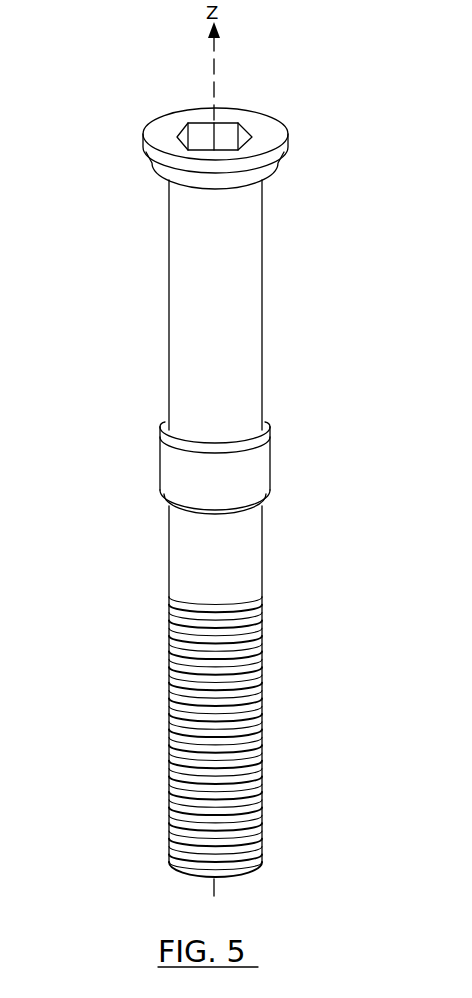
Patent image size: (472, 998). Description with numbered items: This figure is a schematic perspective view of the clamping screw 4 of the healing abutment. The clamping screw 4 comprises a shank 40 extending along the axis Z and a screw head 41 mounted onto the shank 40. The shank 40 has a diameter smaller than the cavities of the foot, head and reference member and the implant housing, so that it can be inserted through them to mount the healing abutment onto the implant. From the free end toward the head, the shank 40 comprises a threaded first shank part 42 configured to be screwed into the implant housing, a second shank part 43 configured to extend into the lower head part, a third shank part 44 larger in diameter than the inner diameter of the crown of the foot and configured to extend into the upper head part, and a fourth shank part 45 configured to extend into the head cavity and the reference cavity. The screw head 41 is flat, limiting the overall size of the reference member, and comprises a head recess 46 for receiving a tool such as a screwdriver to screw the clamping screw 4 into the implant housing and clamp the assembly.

The clamping screw 4 is at (162, 99).
The shank 40 is at (133, 178).
The screw head 41 is at (133, 110).
The threaded first shank part 42 is at (262, 735).
The second shank part 43 is at (262, 550).
The third shank part 44 is at (270, 455).
The fourth shank part 45 is at (262, 292).
The head recess 46 is at (228, 133).